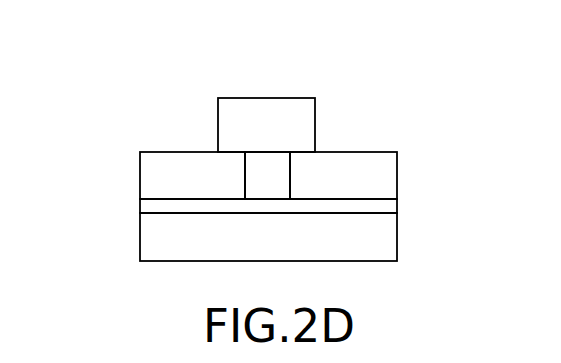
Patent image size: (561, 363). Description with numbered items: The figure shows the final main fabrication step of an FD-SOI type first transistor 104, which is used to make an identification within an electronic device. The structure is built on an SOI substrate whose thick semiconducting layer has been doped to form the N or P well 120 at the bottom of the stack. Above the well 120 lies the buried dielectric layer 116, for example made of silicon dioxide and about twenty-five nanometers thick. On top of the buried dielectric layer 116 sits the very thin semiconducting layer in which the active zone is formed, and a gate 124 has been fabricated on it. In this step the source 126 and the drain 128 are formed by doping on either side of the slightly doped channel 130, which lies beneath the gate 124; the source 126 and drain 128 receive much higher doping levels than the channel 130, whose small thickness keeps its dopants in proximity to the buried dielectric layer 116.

The first transistor 104 is at (165, 100).
The buried dielectric layer 116 is at (388, 207).
The N or P well 120 is at (388, 243).
The gate 124 is at (310, 120).
The source 126 is at (147, 167).
The drain 128 is at (388, 168).
The channel 130 is at (267, 165).